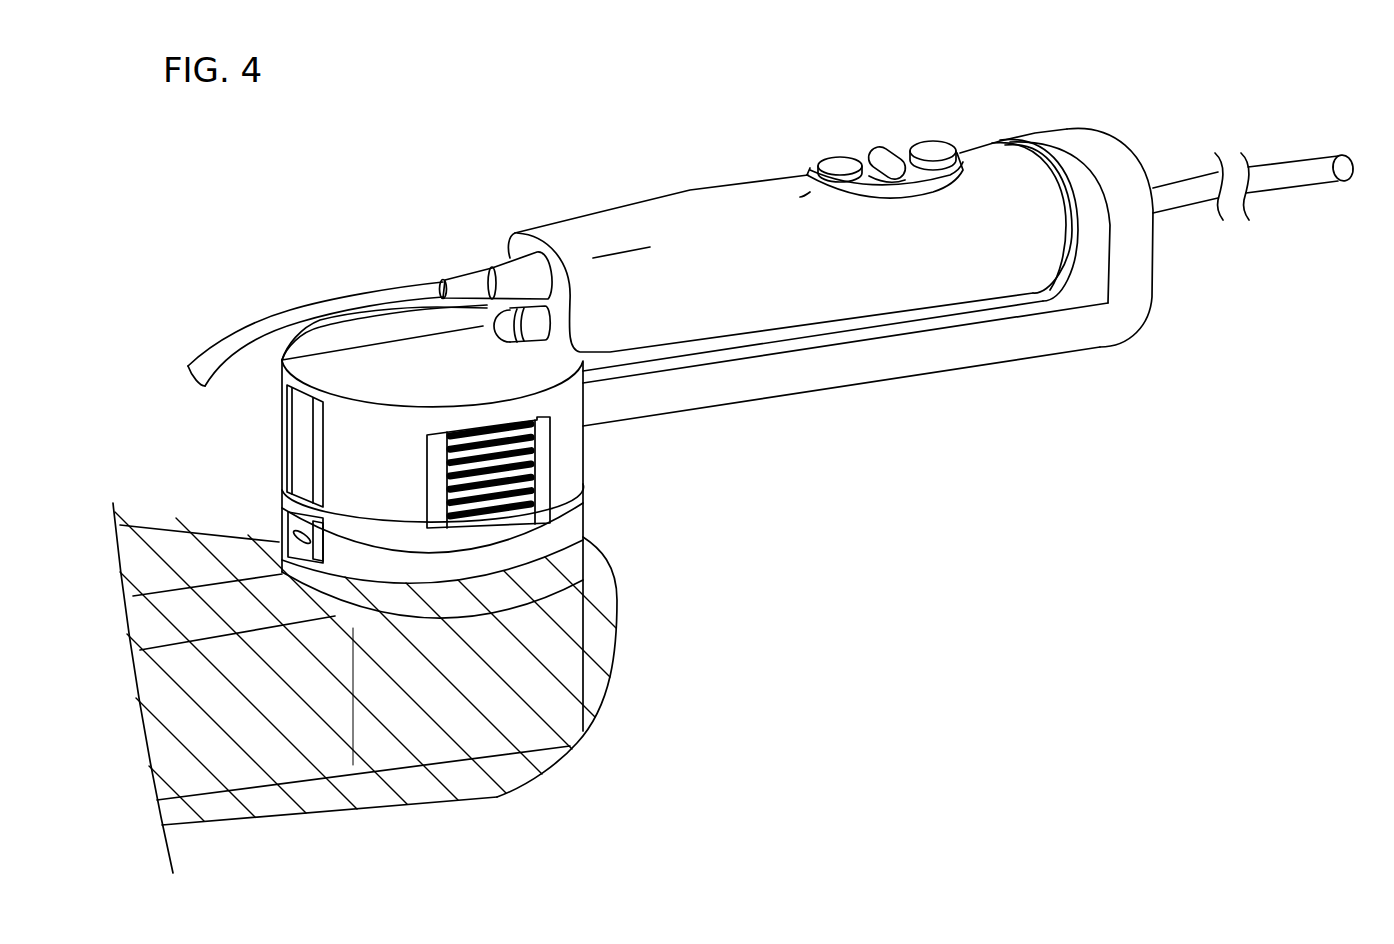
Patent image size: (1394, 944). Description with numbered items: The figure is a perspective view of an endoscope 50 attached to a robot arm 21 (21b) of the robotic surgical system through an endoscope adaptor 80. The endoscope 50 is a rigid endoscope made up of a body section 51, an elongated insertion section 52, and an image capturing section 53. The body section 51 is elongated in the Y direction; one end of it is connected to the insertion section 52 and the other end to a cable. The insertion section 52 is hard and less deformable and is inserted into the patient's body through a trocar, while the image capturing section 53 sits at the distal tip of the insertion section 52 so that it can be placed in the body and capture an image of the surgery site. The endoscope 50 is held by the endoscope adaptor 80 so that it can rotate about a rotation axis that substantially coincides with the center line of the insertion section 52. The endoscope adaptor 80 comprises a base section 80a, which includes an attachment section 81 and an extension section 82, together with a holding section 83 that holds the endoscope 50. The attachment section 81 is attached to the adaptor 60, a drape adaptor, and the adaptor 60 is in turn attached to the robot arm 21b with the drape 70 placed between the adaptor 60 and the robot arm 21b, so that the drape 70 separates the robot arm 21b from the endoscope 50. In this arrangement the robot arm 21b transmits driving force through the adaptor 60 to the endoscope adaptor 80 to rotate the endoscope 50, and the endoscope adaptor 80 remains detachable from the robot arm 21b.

The robot arm 21 is at (364, 688).
The robot arm 21b is at (443, 723).
The endoscope 50 is at (771, 253).
The body section 51 is at (738, 217).
The insertion section 52 is at (1274, 174).
The image capturing section 53 is at (1336, 158).
The adaptor 60 is at (580, 513).
The drape 70 is at (612, 633).
The endoscope adaptor 80 is at (487, 518).
The base section 80a is at (725, 462).
The attachment section 81 is at (305, 455).
The extension section 82 is at (900, 347).
The holding section 83 is at (1130, 227).